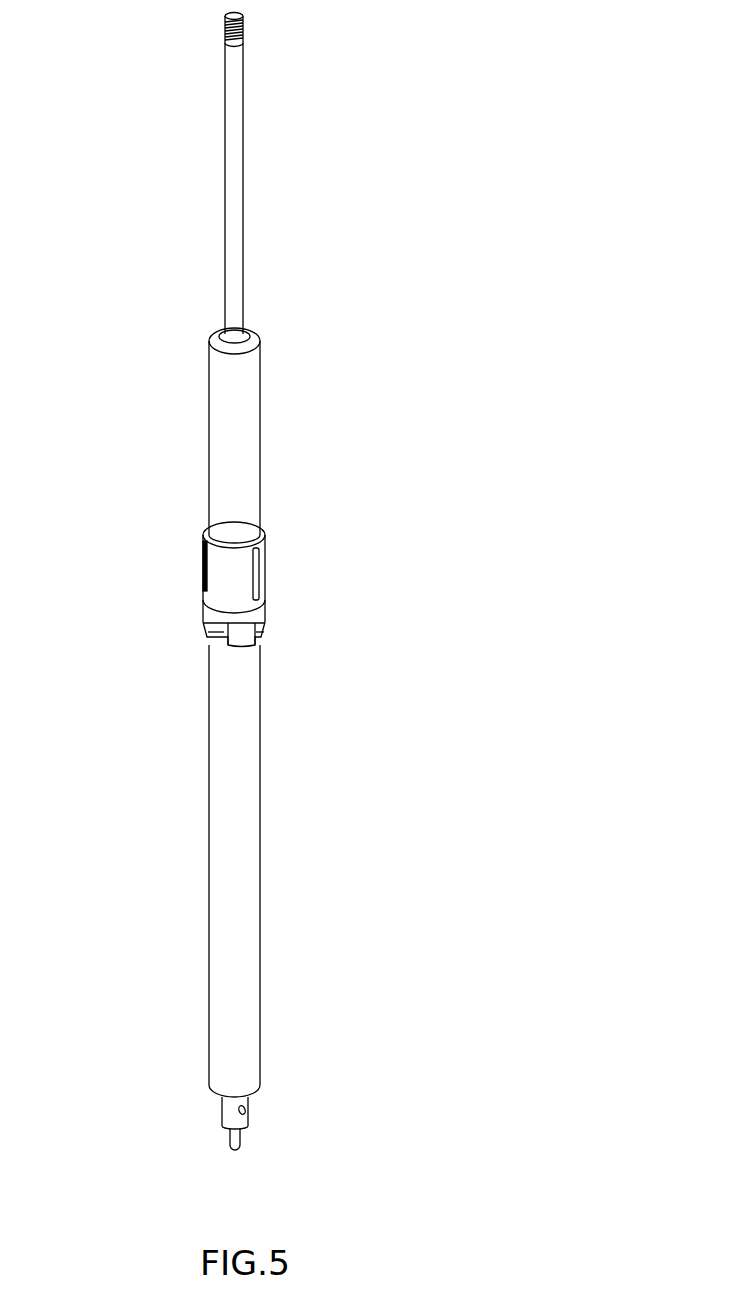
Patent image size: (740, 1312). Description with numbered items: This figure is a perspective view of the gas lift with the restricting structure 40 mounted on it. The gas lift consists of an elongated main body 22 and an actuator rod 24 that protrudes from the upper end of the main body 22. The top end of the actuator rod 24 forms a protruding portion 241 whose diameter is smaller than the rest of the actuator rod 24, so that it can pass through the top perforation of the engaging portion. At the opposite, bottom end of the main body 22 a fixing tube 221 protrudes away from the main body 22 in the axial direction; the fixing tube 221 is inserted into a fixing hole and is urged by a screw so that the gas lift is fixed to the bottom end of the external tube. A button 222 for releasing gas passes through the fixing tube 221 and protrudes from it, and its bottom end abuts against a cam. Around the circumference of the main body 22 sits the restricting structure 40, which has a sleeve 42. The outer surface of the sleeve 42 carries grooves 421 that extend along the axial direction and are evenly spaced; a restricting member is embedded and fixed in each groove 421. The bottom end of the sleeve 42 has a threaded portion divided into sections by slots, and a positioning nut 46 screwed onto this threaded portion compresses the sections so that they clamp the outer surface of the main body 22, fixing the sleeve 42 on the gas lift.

The main body 22 is at (240, 775).
The fixing tube 221 is at (228, 1110).
The button for releasing gas 222 is at (241, 1137).
The actuator rod 24 is at (237, 167).
The protruding portion 241 is at (244, 28).
The restricting structure 40 is at (283, 552).
The sleeve 42 is at (224, 567).
The groove 421 is at (203, 578).
The positioning nut 46 is at (246, 626).